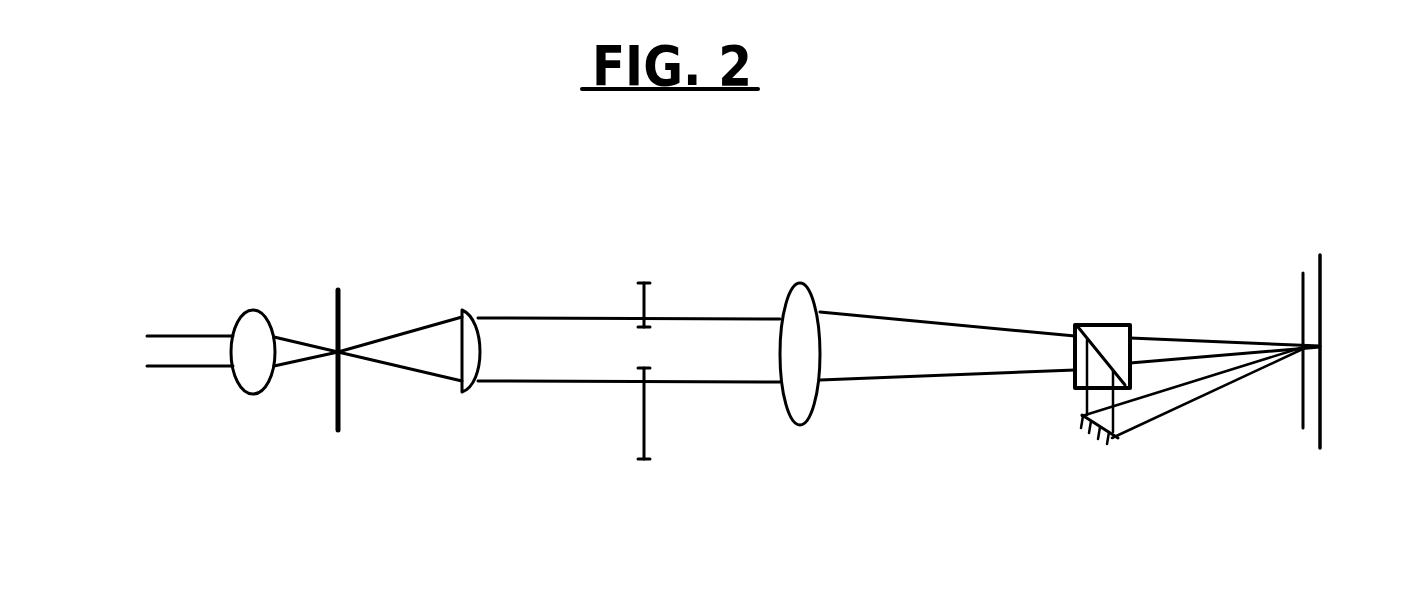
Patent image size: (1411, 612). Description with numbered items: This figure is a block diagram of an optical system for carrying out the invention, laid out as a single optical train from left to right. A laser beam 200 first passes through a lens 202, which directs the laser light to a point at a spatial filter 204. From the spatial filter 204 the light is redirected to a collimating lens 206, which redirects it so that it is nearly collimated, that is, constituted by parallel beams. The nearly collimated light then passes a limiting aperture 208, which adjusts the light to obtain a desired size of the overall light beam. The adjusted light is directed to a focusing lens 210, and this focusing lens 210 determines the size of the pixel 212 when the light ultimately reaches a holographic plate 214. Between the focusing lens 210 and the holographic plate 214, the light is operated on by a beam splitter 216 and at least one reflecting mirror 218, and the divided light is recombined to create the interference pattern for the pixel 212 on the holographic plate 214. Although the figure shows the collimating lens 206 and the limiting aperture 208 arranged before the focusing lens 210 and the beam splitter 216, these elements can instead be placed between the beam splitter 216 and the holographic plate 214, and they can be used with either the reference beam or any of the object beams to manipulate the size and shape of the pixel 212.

The laser beam 200 is at (168, 336).
The lens 202 is at (255, 310).
The spatial filter 204 is at (340, 307).
The collimating lens 206 is at (463, 310).
The limiting aperture 208 is at (645, 303).
The focusing lens 210 is at (800, 283).
The pixel 212 is at (1320, 340).
The holographic plate 214 is at (1302, 412).
The beam splitter 216 is at (1103, 325).
The reflecting mirror 218 is at (1113, 438).